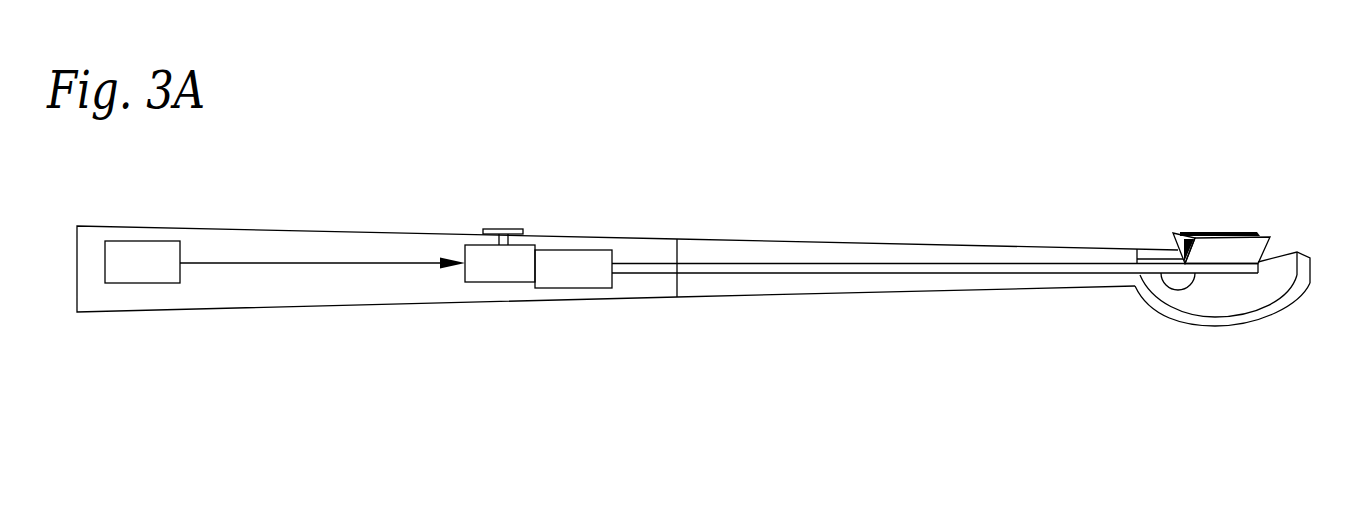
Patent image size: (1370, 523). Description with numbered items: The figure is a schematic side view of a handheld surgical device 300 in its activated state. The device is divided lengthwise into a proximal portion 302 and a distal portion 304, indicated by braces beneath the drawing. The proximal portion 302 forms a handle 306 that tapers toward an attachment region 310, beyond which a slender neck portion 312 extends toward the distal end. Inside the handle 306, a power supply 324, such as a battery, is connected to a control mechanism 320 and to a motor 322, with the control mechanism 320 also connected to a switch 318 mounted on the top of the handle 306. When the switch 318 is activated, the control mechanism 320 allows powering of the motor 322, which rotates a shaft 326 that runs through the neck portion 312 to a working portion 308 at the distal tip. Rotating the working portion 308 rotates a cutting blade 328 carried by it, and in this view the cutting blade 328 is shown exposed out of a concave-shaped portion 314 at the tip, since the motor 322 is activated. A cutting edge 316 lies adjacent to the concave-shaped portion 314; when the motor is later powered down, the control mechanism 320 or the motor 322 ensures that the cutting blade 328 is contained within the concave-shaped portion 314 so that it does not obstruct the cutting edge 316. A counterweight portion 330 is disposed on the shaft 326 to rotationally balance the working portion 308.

The handheld surgical device 300 is at (464, 152).
The proximal portion 302 is at (77, 380).
The distal portion 304 is at (677, 373).
The handle 306 is at (260, 227).
The working portion 308 is at (1163, 200).
The attachment region 310 is at (678, 238).
The neck portion 312 is at (835, 226).
The concave-shaped portion 314 is at (1280, 308).
The cutting edge 316 is at (1288, 248).
The switch 318 is at (495, 228).
The control mechanism 320 is at (520, 276).
The motor 322 is at (593, 281).
The power supply 324 is at (162, 276).
The shaft 326 is at (945, 274).
The cutting blade 328 is at (1168, 245).
The counterweight portion 330 is at (1177, 283).